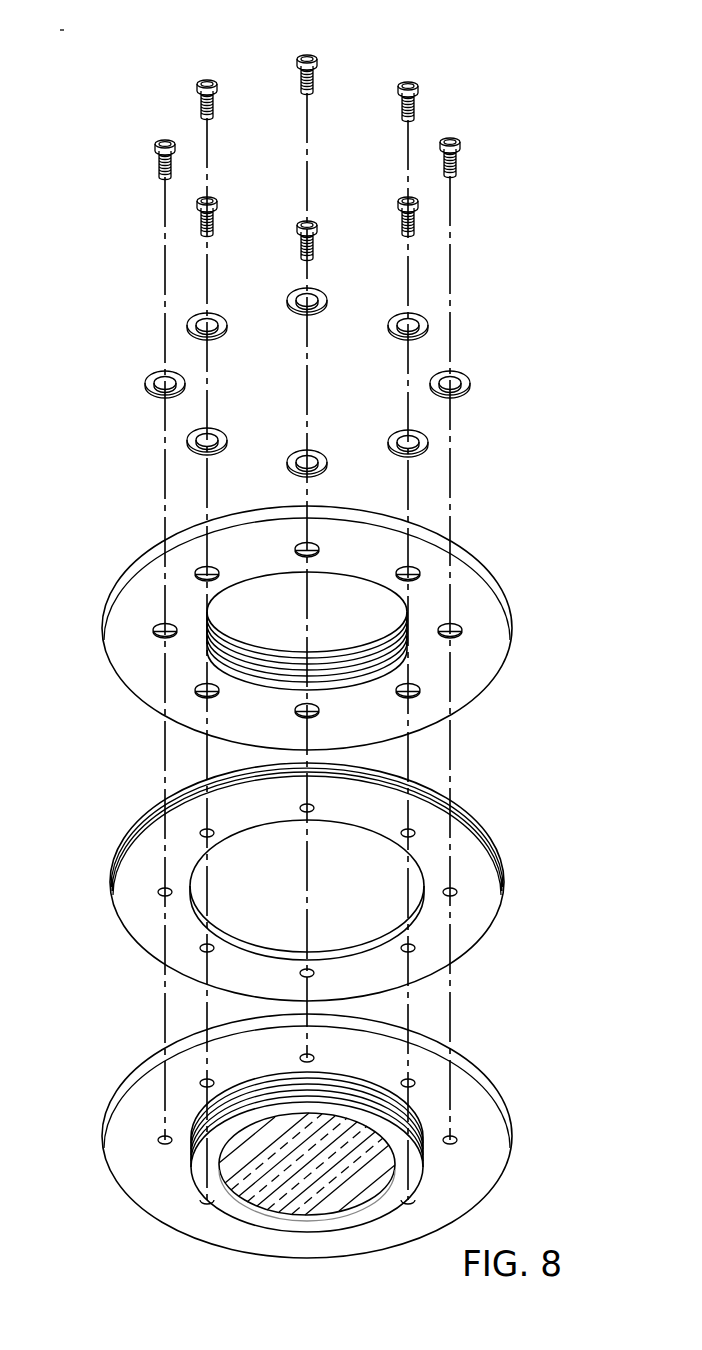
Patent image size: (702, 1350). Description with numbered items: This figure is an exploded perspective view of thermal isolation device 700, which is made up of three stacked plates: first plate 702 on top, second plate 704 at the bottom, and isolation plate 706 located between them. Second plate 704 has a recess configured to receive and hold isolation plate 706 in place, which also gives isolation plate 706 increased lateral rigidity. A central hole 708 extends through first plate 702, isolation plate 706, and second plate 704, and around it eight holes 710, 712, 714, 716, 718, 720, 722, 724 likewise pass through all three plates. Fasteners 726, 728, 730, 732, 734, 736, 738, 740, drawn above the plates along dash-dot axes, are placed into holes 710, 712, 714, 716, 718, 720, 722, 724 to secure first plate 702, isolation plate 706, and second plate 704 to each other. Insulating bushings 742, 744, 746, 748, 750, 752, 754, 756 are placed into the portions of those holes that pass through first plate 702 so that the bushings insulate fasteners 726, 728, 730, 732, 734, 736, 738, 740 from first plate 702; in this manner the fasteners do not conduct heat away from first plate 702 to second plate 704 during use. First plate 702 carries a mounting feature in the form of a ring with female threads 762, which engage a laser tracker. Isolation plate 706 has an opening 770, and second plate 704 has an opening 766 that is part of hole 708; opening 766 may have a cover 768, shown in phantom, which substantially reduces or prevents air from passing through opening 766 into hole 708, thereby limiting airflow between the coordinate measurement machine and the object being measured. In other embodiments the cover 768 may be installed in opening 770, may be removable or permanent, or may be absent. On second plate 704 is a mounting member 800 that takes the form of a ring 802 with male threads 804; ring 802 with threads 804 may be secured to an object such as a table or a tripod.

The thermal isolation device 700 is at (84, 52).
The first plate 702 is at (122, 698).
The second plate 704 is at (124, 1207).
The isolation plate 706 is at (120, 932).
The hole 708 is at (333, 594).
The hole 710 is at (202, 583).
The hole 712 is at (152, 631).
The hole 714 is at (219, 692).
The hole 716 is at (319, 713).
The hole 718 is at (420, 691).
The hole 720 is at (462, 631).
The hole 722 is at (413, 583).
The hole 724 is at (295, 548).
The fastener 726 is at (298, 250).
The fastener 728 is at (216, 216).
The fastener 730 is at (157, 160).
The fastener 732 is at (199, 102).
The fastener 734 is at (298, 75).
The fastener 736 is at (416, 100).
The fastener 738 is at (458, 158).
The fastener 740 is at (400, 216).
The insulating bushing 742 is at (146, 382).
The insulating bushing 744 is at (226, 330).
The insulating bushing 746 is at (289, 298).
The insulating bushing 748 is at (397, 314).
The insulating bushing 750 is at (457, 373).
The insulating bushing 752 is at (396, 431).
The insulating bushing 754 is at (289, 465).
The insulating bushing 756 is at (226, 437).
The female threads 762 is at (292, 660).
The opening 766 is at (292, 1195).
The cover 768 is at (340, 1128).
The opening 770 is at (332, 848).
The mounting member 800 is at (430, 1116).
The ring 802 is at (205, 1180).
The threads 804 is at (264, 1090).